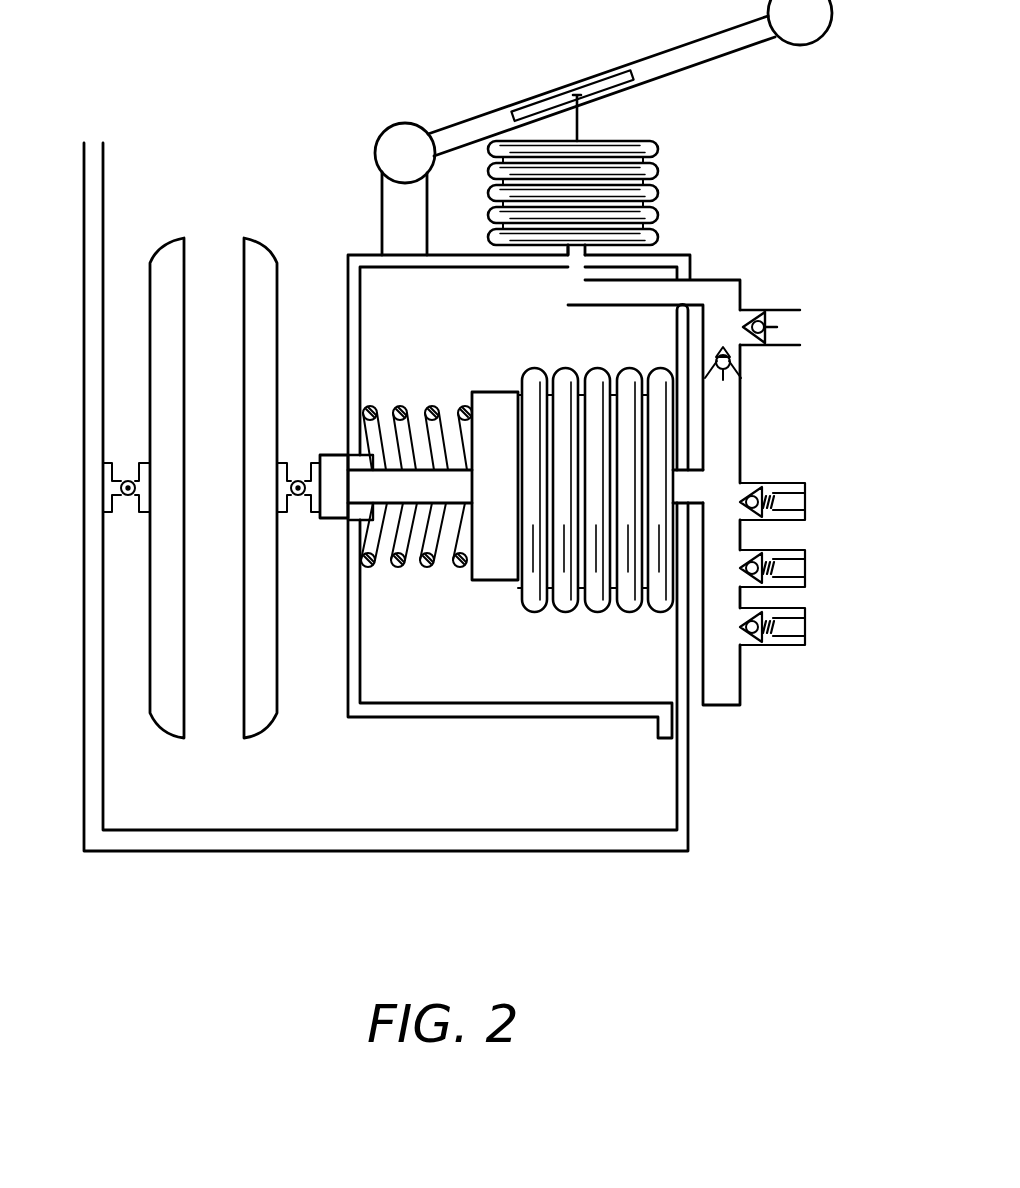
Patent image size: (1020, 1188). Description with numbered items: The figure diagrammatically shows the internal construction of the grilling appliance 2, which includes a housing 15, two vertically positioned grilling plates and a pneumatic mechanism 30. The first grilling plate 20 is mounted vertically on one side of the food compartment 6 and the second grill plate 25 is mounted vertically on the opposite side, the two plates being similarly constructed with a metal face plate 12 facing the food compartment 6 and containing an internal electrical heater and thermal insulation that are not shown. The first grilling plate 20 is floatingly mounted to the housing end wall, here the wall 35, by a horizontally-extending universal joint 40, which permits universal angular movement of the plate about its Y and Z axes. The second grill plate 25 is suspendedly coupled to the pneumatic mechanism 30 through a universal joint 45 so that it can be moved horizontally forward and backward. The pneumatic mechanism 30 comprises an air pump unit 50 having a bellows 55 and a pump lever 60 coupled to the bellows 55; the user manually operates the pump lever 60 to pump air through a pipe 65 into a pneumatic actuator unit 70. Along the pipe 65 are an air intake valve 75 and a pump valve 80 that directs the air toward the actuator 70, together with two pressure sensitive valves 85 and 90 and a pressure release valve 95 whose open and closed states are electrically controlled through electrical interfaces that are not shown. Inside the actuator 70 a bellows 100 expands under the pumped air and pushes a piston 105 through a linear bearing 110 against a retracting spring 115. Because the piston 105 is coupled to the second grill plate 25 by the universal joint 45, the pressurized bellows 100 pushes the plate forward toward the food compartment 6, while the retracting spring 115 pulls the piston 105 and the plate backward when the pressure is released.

The grilling appliance 2 is at (750, 792).
The food compartment 6 is at (212, 248).
The metal face plate 12 is at (184, 718).
The housing 15 is at (648, 843).
The first grilling plate 20 is at (163, 257).
The second grill plate 25 is at (260, 248).
The pneumatic mechanism 30 is at (537, 742).
The housing wall 35 is at (97, 373).
The universal joint 40 is at (140, 492).
The universal joint 45 is at (290, 492).
The air pump unit 50 is at (705, 142).
The bellows 55 is at (657, 212).
The pump lever 60 is at (750, 48).
The pipe 65 is at (730, 428).
The pneumatic actuator unit 70 is at (527, 638).
The air intake valve 75 is at (790, 330).
The pump valve 80 is at (732, 365).
The pressure sensitive valve 85 is at (800, 503).
The pressure sensitive valve 90 is at (800, 570).
The pressure release valve 95 is at (800, 630).
The bellows 100 is at (600, 620).
The piston 105 is at (402, 495).
The linear bearing 110 is at (357, 458).
The retracting spring 115 is at (457, 568).